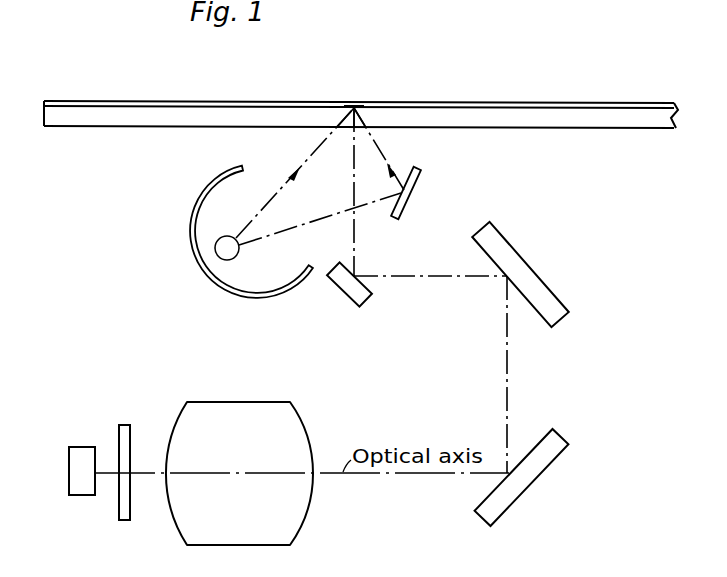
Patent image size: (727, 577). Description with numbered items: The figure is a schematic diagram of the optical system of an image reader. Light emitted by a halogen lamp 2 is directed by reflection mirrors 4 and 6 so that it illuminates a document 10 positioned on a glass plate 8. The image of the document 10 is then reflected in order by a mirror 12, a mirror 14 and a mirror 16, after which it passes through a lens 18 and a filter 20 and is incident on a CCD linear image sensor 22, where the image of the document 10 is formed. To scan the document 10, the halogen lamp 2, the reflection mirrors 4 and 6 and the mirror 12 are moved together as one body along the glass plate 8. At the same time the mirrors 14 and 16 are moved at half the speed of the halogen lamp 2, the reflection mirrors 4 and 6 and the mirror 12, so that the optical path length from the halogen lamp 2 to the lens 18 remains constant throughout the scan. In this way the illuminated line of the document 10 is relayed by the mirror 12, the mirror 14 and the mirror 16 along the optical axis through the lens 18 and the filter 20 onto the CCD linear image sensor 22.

The halogen lamp 2 is at (222, 243).
The reflection mirror 4 is at (193, 258).
The reflection mirror 6 is at (417, 180).
The glass plate 8 is at (124, 106).
The document 10 is at (365, 101).
The mirror 12 is at (341, 293).
The mirror 14 is at (517, 260).
The mirror 16 is at (527, 473).
The lens 18 is at (303, 416).
The filter 20 is at (126, 425).
The CCD linear image sensor 22 is at (80, 447).